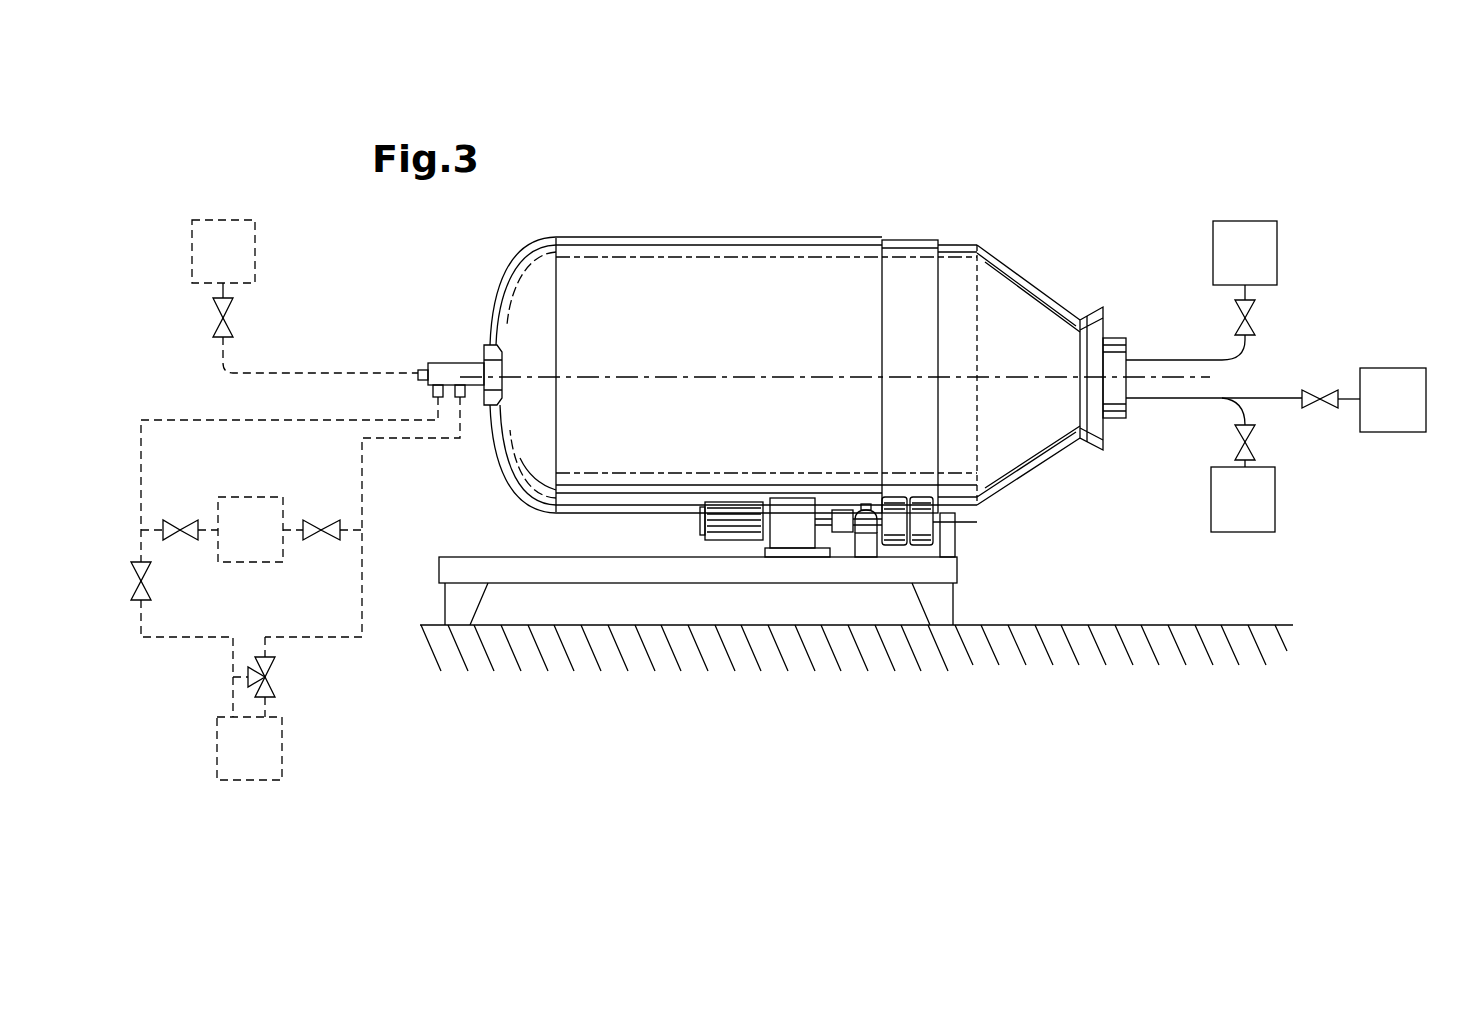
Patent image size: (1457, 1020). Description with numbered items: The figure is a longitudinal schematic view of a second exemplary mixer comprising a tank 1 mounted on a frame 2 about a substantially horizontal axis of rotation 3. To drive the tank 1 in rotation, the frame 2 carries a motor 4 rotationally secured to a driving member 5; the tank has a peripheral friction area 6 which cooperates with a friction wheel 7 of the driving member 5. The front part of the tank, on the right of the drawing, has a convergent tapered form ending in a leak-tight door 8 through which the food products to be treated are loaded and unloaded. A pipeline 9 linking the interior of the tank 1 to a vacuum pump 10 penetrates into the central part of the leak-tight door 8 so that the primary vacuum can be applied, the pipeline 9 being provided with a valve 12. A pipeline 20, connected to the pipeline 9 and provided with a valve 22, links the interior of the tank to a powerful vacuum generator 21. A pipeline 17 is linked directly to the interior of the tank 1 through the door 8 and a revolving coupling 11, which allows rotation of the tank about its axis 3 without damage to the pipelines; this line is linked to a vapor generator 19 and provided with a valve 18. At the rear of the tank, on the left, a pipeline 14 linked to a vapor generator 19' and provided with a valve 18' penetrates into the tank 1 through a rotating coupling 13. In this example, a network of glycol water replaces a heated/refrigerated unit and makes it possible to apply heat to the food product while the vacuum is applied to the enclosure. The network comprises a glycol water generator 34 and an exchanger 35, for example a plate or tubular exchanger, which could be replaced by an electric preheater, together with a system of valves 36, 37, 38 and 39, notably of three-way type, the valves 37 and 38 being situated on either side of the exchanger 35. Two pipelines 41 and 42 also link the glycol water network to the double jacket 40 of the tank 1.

The tank 1 is at (955, 258).
The frame 2 is at (515, 567).
The axis of rotation 3 is at (590, 375).
The motor 4 is at (790, 540).
The driving member 5 is at (930, 548).
The peripheral friction area 6 is at (908, 252).
The friction wheel 7 is at (895, 545).
The leak-tight door 8 is at (1115, 330).
The pipeline 9 is at (1185, 400).
The vacuum pump 10 is at (1275, 503).
The revolving coupling 11 is at (1126, 410).
The valve 12 is at (1250, 445).
The rotating coupling 13 is at (487, 405).
The pipeline 14 is at (225, 360).
The pipeline 17 is at (1176, 358).
The valve 18 is at (1272, 314).
The valve 18' is at (253, 312).
The vapor generator 19 is at (1279, 251).
The vapor generator 19' is at (257, 251).
The pipeline 20 is at (1265, 397).
The powerful vacuum generator 21 is at (1410, 368).
The valve 22 is at (1318, 392).
The glycol water generator 34 is at (270, 751).
The exchanger 35 is at (255, 505).
The valve 36 is at (272, 675).
The valve 37 is at (322, 520).
The valve 38 is at (180, 520).
The valve 39 is at (143, 580).
The double jacket 40 is at (716, 237).
The pipeline 41 is at (363, 585).
The pipeline 42 is at (141, 468).